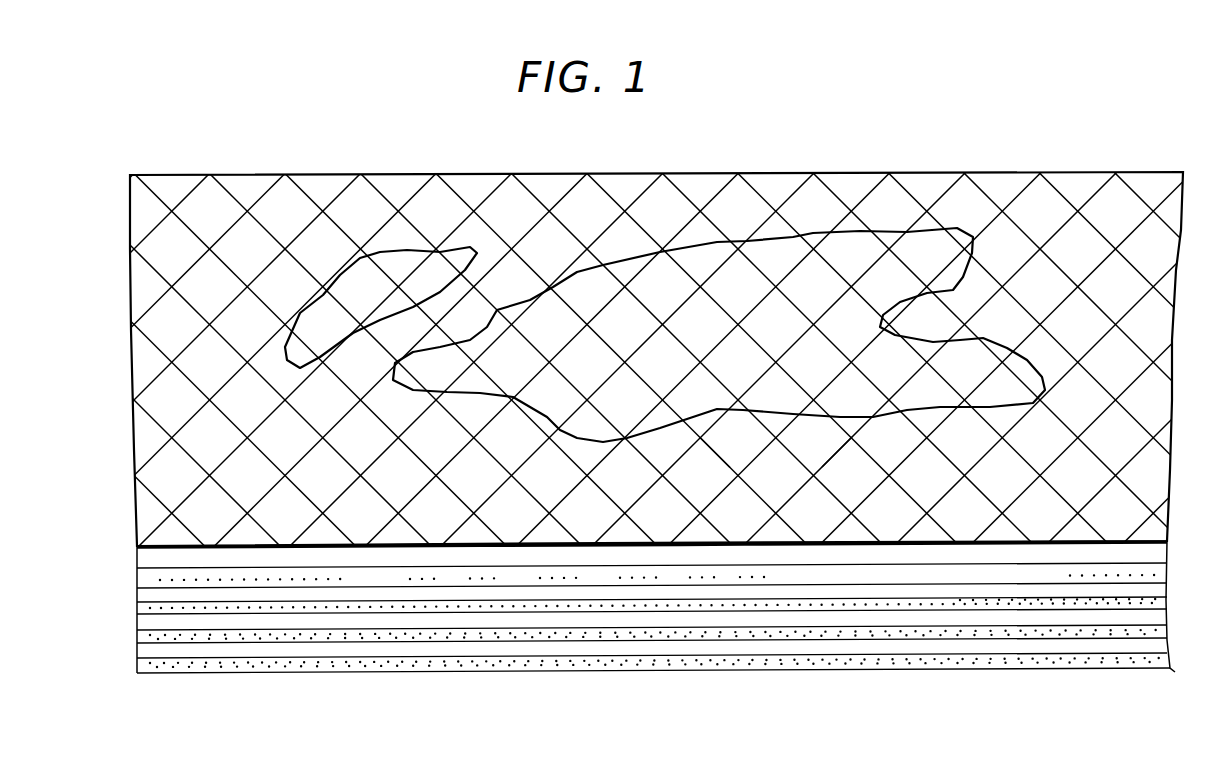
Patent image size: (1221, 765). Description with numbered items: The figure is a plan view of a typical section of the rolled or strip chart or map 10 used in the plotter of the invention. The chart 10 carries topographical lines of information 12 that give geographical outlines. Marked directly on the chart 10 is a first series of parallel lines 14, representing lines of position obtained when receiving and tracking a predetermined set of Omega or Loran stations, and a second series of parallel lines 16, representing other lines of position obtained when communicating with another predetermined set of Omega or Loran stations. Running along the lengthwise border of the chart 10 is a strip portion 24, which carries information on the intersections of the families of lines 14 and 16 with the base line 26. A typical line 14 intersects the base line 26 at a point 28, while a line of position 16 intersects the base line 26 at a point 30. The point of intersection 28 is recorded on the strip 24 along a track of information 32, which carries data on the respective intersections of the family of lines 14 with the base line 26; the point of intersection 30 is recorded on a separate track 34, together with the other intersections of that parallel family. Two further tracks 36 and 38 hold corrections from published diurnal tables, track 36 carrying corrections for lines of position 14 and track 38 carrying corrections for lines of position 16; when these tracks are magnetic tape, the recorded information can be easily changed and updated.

The chart 10 is at (714, 176).
The topographical lines of information 12 is at (813, 233).
The first series of parallel lines 14 is at (725, 438).
The second series of parallel lines 16 is at (833, 453).
The strip portion 24 is at (583, 550).
The base line 26 is at (433, 542).
The point of intersection 28 is at (725, 542).
The point of intersection 30 is at (747, 542).
The track of information 32 is at (155, 580).
The track 34 is at (145, 608).
The track 36 is at (140, 637).
The track 38 is at (140, 665).